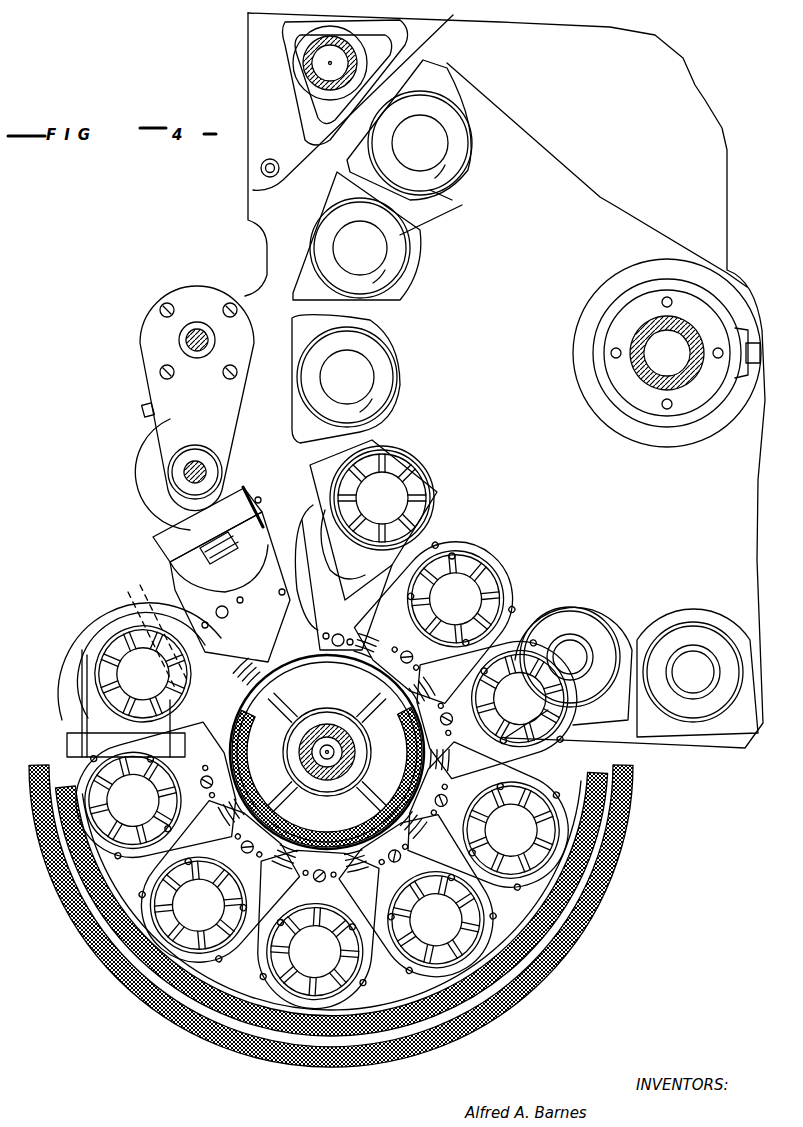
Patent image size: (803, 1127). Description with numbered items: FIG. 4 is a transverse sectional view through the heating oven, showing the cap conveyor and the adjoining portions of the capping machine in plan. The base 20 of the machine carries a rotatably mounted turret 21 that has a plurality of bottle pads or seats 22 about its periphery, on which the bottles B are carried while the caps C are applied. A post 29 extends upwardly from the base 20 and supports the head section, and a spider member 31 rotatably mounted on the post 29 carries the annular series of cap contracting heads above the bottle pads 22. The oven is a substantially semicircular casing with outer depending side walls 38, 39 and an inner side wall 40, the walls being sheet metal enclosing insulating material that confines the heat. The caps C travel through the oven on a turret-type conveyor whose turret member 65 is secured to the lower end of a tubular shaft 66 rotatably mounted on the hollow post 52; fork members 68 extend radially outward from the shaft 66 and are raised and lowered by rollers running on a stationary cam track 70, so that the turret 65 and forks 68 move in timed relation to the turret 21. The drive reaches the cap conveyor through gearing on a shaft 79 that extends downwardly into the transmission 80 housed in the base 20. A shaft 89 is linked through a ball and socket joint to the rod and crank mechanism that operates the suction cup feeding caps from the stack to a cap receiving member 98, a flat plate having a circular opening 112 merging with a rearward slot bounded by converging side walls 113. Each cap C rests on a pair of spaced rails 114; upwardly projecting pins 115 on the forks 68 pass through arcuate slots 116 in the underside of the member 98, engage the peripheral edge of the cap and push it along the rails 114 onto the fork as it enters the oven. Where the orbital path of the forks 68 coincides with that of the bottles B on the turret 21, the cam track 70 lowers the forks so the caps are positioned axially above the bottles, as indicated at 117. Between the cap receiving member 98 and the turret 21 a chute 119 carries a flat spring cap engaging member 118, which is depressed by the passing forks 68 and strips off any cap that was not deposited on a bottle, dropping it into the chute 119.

The base 20 is at (248, 60).
The turret 21 is at (505, 380).
The bottle pads 22 is at (440, 211).
The post 29 is at (640, 380).
The spider member 31 is at (583, 380).
The outer depending side wall 38 is at (275, 978).
The outer depending side wall 39 is at (260, 1055).
The inner side wall 40 is at (333, 752).
The hollow post 52 is at (350, 750).
The turret member 65 is at (290, 750).
The tubular shaft 66 is at (335, 725).
The fork members 68 is at (325, 694).
The cam track 70 is at (302, 650).
The shaft 79 is at (200, 462).
The transmission 80 is at (140, 472).
The shaft 89 is at (197, 322).
The cap receiving member 98 is at (95, 605).
The circular opening 112 is at (95, 632).
The converging side walls 113 is at (82, 722).
The rails 114 is at (85, 696).
The pins 115 is at (273, 555).
The arcuate slots 116 is at (140, 590).
The cap depositing position 117 is at (512, 566).
The cap engaging member 118 is at (207, 535).
The chute 119 is at (248, 480).
The bottles B is at (393, 360).
The caps C is at (573, 748).